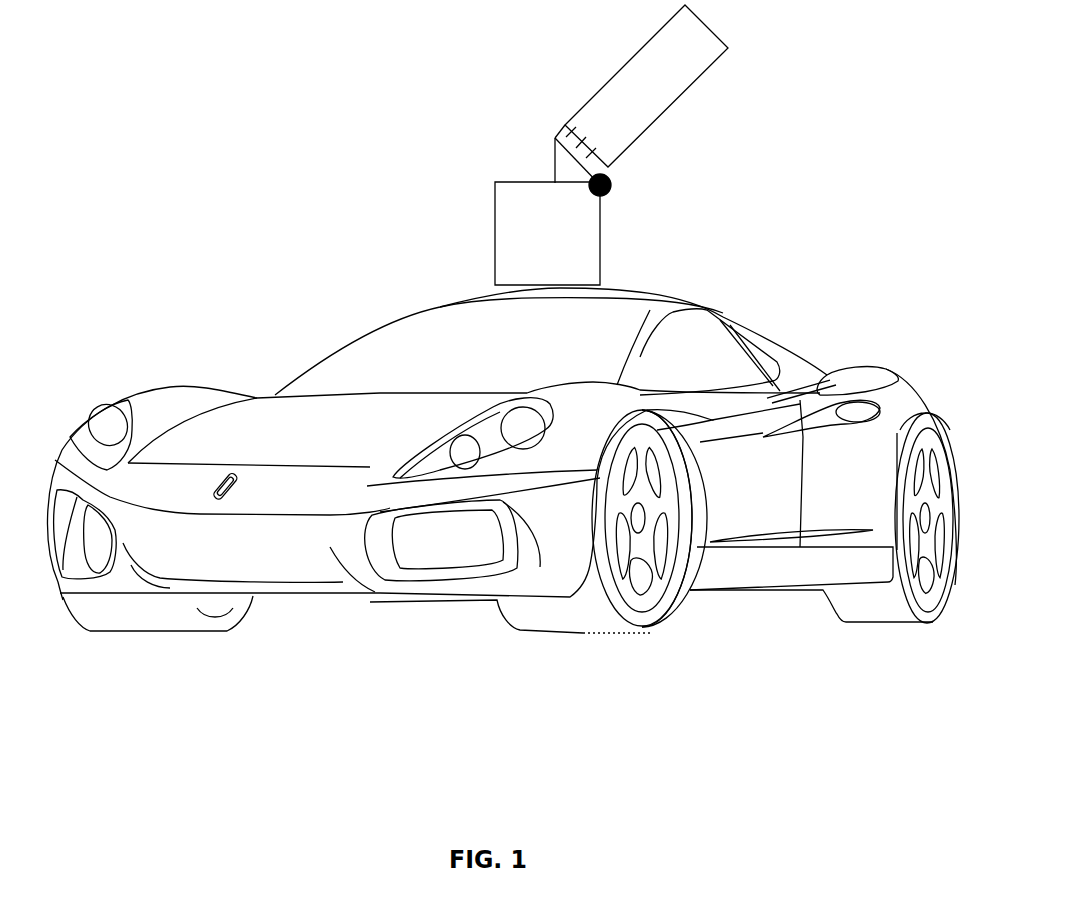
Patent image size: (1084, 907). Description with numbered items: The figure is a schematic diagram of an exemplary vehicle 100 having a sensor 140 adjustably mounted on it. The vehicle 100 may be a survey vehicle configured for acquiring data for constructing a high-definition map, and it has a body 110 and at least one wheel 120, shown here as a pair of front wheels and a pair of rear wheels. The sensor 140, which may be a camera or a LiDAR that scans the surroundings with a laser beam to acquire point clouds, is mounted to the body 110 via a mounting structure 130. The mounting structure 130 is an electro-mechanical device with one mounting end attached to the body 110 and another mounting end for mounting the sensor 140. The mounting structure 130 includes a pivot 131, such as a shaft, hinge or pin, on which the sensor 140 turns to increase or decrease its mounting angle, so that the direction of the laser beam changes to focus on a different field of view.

The vehicle 100 is at (503, 396).
The body 110 is at (307, 350).
The wheel 120 is at (682, 605).
The mounting structure 130 is at (486, 215).
The pivot 131 is at (617, 197).
The sensor 140 is at (547, 147).